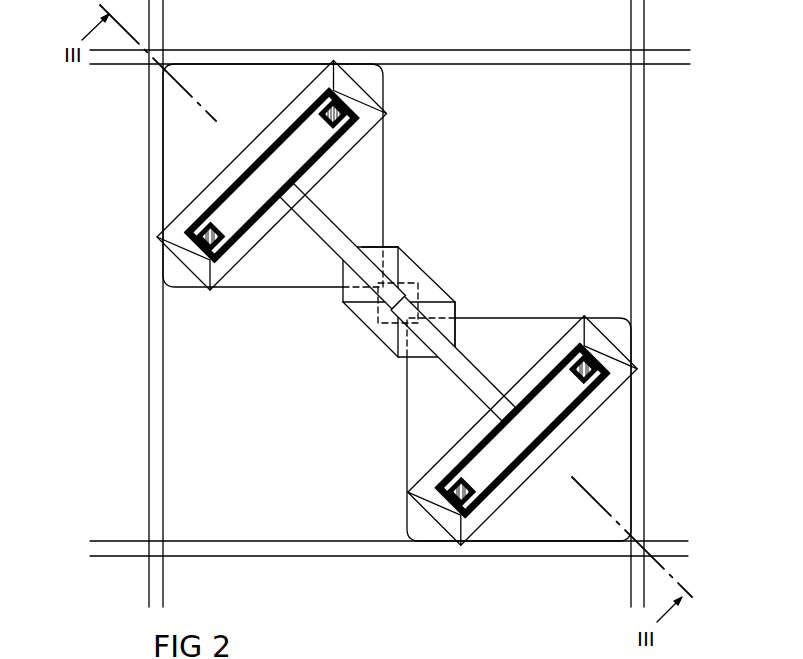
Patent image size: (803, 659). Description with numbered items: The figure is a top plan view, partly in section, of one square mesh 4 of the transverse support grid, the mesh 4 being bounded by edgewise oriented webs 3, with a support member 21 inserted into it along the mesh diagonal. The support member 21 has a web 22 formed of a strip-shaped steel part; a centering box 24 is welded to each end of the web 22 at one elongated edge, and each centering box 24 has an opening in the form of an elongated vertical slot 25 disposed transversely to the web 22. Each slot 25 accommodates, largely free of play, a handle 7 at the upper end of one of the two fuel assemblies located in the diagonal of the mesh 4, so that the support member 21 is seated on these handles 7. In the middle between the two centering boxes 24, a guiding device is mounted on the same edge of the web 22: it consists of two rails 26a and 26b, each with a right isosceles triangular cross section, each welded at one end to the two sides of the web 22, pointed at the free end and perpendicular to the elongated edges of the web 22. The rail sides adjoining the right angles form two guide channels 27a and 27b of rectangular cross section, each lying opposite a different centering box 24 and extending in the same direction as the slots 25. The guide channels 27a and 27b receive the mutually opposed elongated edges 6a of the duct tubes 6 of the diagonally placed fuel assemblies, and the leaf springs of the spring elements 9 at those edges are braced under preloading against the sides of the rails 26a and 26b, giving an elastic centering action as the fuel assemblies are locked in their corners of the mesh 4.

The webs 3 is at (504, 50).
The mesh 4 is at (254, 510).
The duct tube 6 is at (384, 150).
The edge of the duct tube 6a is at (357, 289).
The handle 7 is at (336, 128).
The spring element 9 is at (392, 247).
The support member 21 is at (325, 219).
The web 22 is at (467, 372).
The centering box 24 is at (372, 88).
The slot 25 is at (300, 143).
The rail 26a is at (418, 280).
The rail 26b is at (372, 337).
The guide channel 27a is at (410, 368).
The guide channel 27b is at (337, 306).